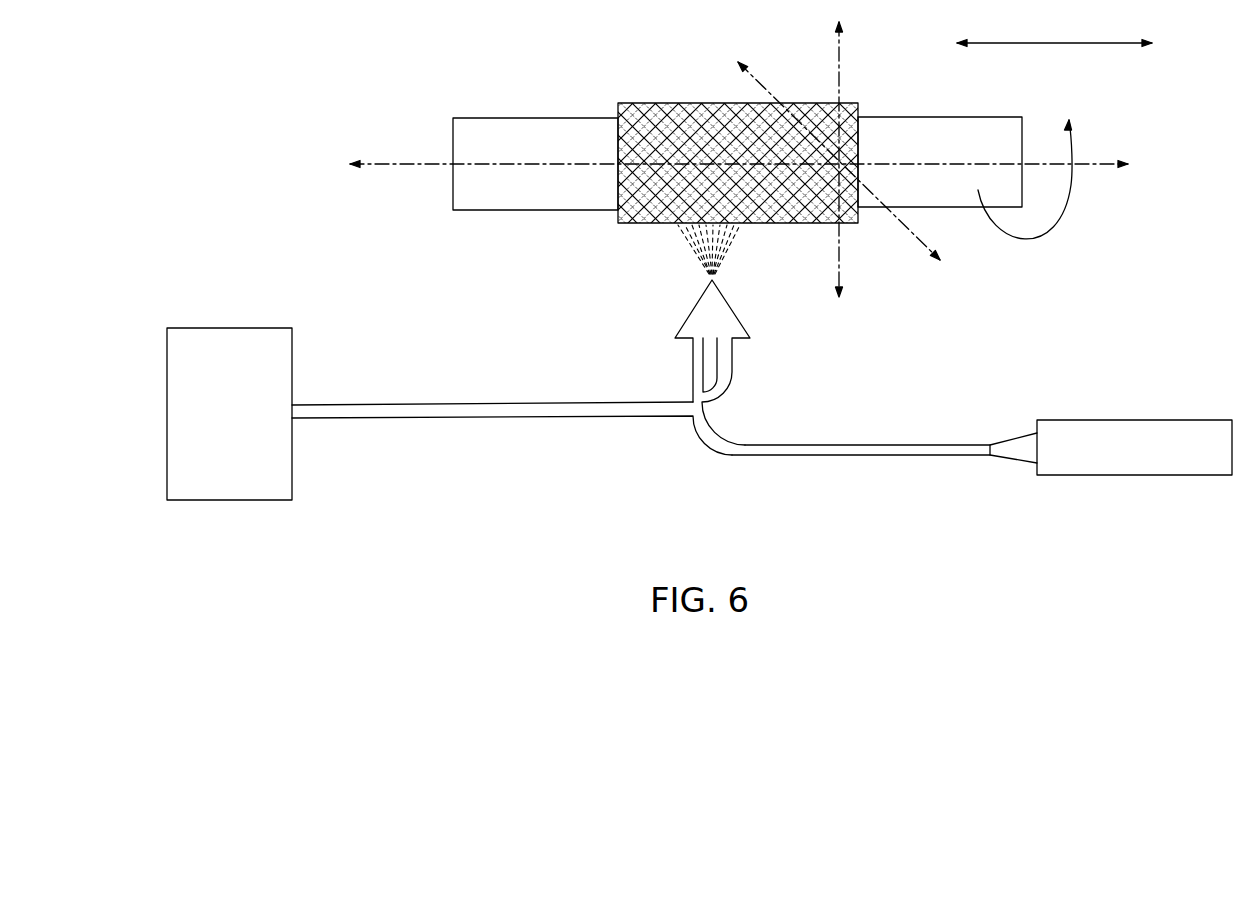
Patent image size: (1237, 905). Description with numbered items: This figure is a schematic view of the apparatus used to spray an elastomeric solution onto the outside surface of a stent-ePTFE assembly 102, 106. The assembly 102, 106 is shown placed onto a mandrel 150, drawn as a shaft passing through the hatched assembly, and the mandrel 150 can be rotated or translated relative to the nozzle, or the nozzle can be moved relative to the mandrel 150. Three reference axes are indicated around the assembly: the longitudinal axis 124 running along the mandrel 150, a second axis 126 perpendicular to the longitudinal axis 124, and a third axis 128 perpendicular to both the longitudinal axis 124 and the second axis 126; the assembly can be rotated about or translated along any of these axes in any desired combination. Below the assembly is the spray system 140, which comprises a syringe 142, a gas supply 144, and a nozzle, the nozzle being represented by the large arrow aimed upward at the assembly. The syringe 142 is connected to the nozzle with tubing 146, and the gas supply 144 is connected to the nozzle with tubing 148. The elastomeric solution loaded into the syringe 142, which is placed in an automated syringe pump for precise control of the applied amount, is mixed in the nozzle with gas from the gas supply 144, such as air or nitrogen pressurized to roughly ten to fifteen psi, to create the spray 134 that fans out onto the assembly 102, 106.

The stent 102 is at (732, 129).
The ePTFE layer 106 is at (688, 120).
The longitudinal axis 124 is at (1106, 166).
The second axis 126 is at (915, 233).
The third axis 128 is at (837, 53).
The spray 134 is at (690, 245).
The spray system 140 is at (808, 397).
The syringe 142 is at (1137, 475).
The gas supply 144 is at (230, 500).
The tubing 146 is at (822, 455).
The tubing 148 is at (527, 418).
The mandrel 150 is at (488, 150).